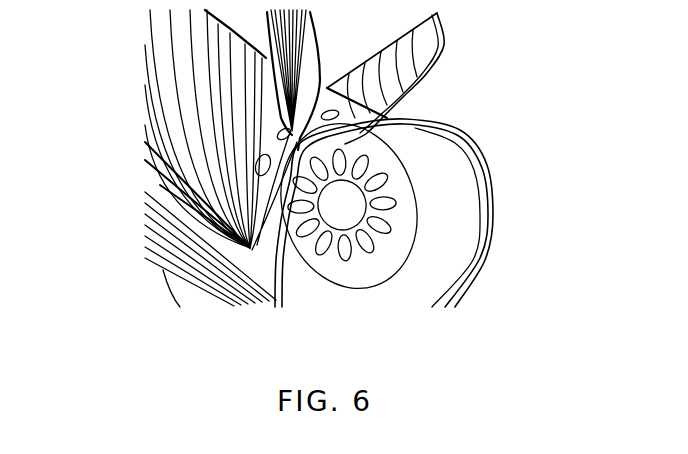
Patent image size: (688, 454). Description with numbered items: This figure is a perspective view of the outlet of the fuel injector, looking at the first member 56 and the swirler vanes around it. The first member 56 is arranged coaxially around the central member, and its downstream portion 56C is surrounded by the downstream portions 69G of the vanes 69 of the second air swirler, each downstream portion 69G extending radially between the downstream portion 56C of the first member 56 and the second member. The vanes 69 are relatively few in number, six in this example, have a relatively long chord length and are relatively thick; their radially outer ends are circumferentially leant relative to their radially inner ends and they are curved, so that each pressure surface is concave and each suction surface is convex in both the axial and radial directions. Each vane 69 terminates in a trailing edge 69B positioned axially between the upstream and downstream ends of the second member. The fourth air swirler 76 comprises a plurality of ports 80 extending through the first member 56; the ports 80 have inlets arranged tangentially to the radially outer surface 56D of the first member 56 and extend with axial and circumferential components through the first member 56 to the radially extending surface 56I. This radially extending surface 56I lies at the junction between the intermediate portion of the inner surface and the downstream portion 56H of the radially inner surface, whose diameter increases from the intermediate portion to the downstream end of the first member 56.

The first member 56 is at (488, 162).
The downstream portion of the first member 56C is at (470, 208).
The radially outer surface of the first member 56D is at (267, 113).
The downstream portion of the radially inner surface of the first member 56H is at (463, 190).
The radially extending surface 56I is at (398, 225).
The vanes 69 is at (185, 260).
The trailing edge 69B is at (257, 232).
The downstream portion of the vane 69G is at (425, 52).
The fourth air swirler 76 is at (347, 253).
The ports 80 is at (333, 111).